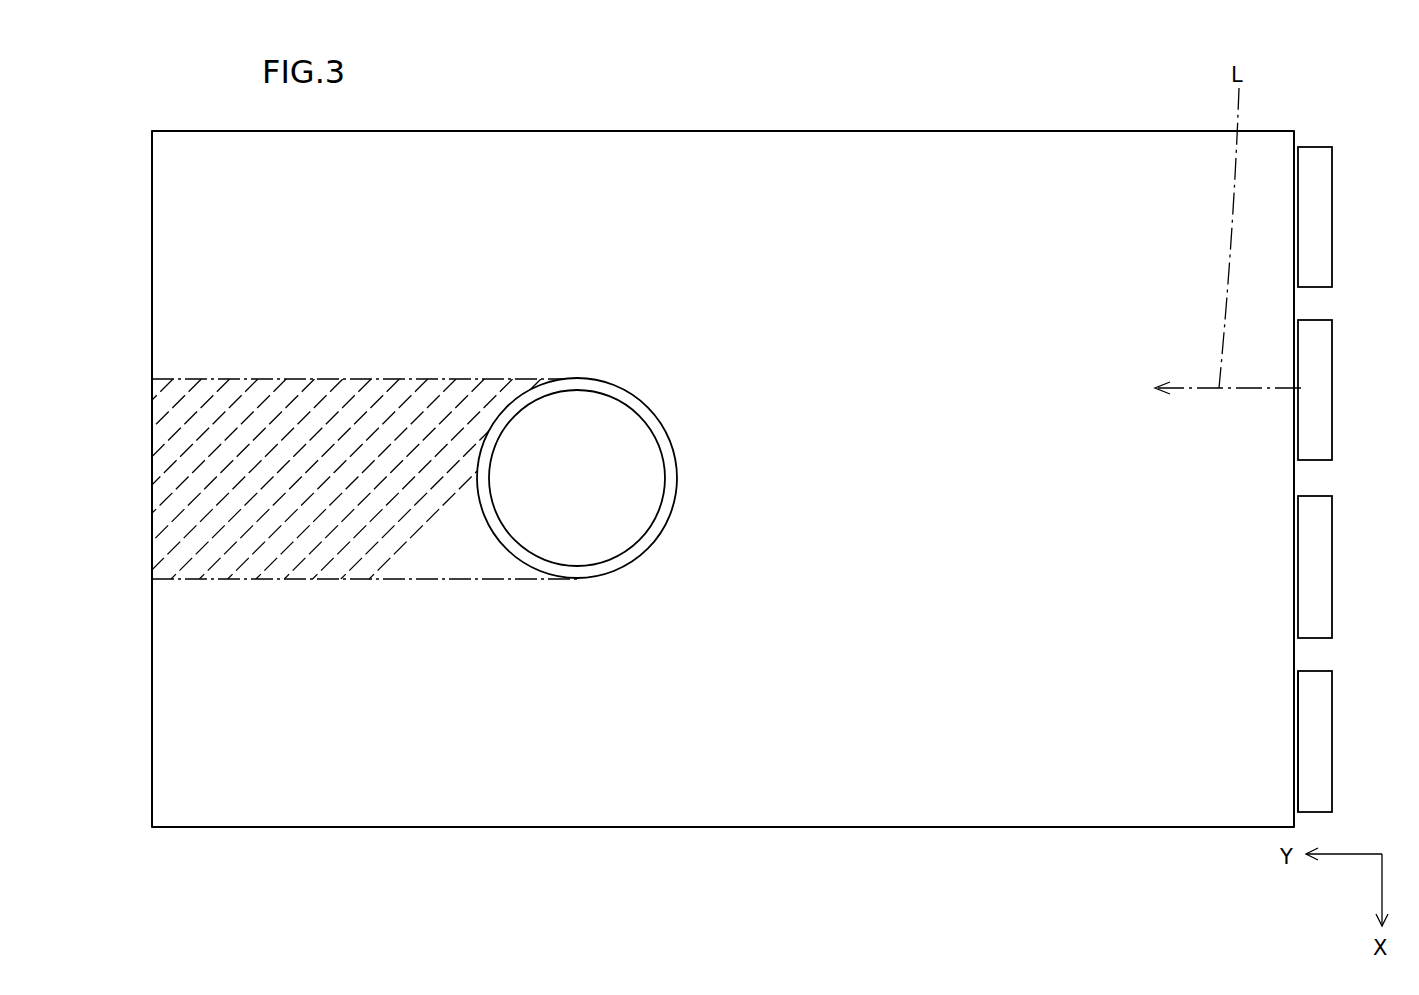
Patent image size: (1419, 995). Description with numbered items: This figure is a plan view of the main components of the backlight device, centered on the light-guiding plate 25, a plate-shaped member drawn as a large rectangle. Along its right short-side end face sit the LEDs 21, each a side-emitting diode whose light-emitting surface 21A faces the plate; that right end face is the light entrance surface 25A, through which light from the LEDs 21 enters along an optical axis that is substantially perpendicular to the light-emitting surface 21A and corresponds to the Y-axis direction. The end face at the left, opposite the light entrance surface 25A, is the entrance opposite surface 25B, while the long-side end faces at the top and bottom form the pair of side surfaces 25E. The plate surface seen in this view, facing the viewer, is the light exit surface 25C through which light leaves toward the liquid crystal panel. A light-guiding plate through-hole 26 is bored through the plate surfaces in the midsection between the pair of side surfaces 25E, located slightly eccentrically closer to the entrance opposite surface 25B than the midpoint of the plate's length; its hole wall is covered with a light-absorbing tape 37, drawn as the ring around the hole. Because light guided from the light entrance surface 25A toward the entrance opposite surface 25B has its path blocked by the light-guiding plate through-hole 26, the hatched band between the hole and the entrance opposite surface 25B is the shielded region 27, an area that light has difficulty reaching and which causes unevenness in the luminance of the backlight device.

The light-guiding plate 25 is at (716, 104).
The side surfaces 25E is at (463, 131).
The light exit surface 25C is at (1058, 155).
The entrance opposite surface 25B is at (152, 283).
The light entrance surface 25A is at (1294, 303).
The shielded region 27 is at (193, 488).
The light-guiding plate through-hole 26 is at (492, 542).
The light-absorbing tape 37 is at (617, 567).
The LEDs 21 is at (1324, 708).
The light-emitting surface 21A is at (1298, 737).